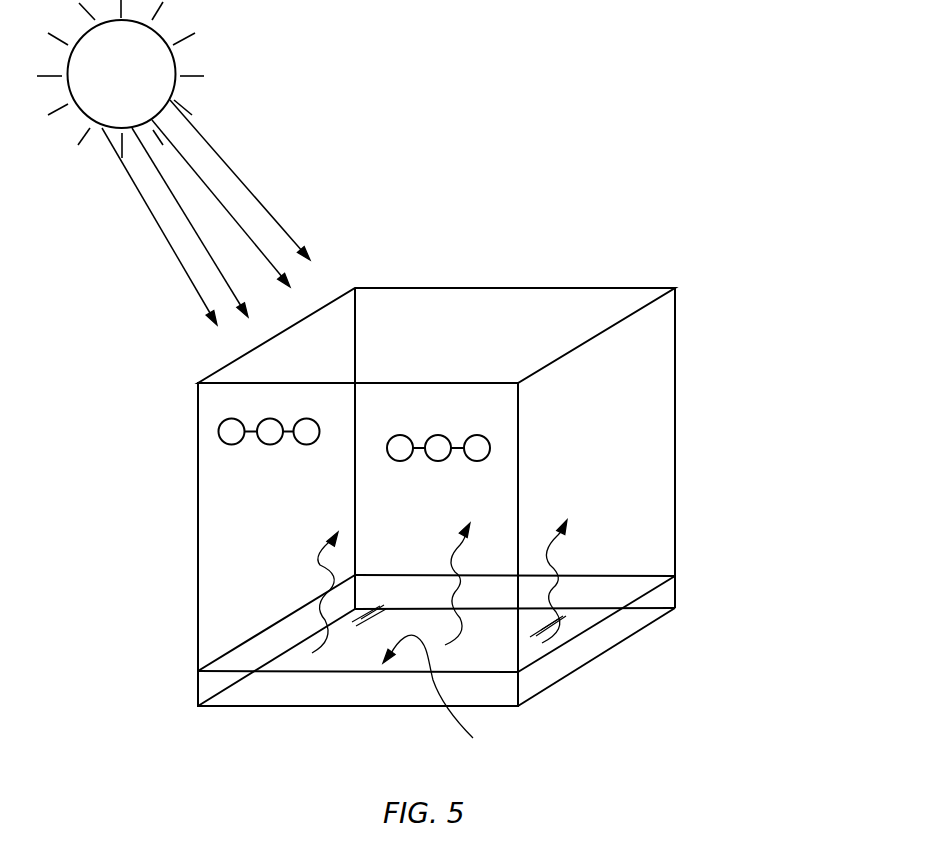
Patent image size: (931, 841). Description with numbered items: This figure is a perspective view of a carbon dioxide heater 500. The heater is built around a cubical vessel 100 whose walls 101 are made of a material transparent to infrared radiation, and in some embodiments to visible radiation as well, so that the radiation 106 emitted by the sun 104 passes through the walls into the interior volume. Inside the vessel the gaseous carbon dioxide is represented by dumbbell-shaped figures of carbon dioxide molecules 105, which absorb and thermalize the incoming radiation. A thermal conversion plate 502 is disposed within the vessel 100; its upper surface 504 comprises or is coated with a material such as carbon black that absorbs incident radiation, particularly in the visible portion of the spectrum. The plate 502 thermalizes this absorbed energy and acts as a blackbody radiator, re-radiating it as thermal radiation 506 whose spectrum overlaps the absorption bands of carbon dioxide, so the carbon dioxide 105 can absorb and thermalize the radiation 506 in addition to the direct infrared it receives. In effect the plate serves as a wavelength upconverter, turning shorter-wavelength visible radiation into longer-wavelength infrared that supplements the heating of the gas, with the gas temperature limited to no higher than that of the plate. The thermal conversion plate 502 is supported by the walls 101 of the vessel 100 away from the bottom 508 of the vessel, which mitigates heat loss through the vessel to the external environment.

The vessel 100 is at (662, 507).
The walls 101 is at (527, 302).
The sun 104 is at (105, 88).
The carbon dioxide molecules 105 is at (243, 457).
The radiation 106 is at (218, 145).
The carbon dioxide heater 500 is at (456, 502).
The thermal conversion plate 502 is at (553, 652).
The upper surface 504 is at (448, 699).
The thermal radiation 506 is at (317, 558).
The bottom 508 is at (318, 700).